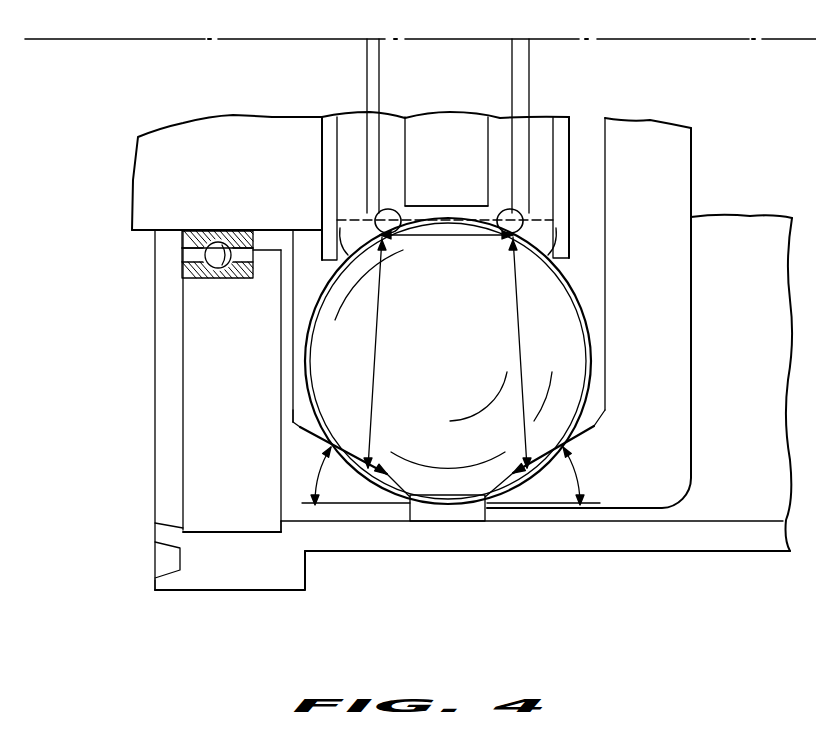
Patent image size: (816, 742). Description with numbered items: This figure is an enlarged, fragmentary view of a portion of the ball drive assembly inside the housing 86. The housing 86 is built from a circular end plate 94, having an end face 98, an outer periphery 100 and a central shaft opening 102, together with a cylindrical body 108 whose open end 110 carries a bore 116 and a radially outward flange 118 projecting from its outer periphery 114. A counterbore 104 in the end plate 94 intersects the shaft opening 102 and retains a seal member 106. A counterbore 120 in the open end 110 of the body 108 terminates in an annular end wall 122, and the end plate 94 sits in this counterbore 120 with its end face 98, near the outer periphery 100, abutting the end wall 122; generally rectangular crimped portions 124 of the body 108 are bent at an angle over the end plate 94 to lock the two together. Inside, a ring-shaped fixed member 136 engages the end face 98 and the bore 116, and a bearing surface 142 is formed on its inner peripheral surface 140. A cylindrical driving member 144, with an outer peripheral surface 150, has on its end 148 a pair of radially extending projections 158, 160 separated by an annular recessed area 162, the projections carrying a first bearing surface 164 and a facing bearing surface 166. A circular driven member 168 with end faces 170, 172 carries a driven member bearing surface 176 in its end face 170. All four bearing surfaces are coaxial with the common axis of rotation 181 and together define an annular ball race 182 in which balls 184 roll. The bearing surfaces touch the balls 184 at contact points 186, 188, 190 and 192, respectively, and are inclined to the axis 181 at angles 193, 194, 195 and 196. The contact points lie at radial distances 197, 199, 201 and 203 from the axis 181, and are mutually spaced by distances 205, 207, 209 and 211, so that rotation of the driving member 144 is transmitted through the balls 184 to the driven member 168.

The housing 86 is at (610, 553).
The end plate 94 is at (190, 337).
The end face 98 is at (284, 308).
The outer periphery 100 is at (254, 534).
The shaft opening 102 is at (248, 231).
The counterbore 104 is at (215, 243).
The seal member 106 is at (190, 252).
The body 108 is at (731, 544).
The open end 110 is at (166, 583).
The outer periphery 114 is at (525, 551).
The bore 116 is at (721, 520).
The flange 118 is at (276, 580).
The counterbore 120 is at (233, 527).
The end wall 122 is at (279, 526).
The crimped portions 124 is at (170, 558).
The fixed member 136 is at (292, 480).
The inner peripheral surface 140 is at (291, 410).
The bearing surface 142 is at (305, 424).
The driving member 144 is at (282, 112).
The end 148 is at (572, 152).
The outer peripheral surface 150 is at (303, 232).
The projection 158 is at (344, 140).
The projection 160 is at (560, 116).
The annular recessed area 162 is at (433, 205).
The first bearing surface 164 is at (390, 258).
The bearing surface 166 is at (509, 268).
The driven member 168 is at (676, 195).
The end face 170 is at (485, 503).
The end face 172 is at (693, 147).
The driven member bearing surface 176 is at (608, 414).
The common axis of rotation 181 is at (655, 39).
The annular ball race 182 is at (560, 267).
The balls 184 is at (570, 327).
The contact point 186 is at (367, 478).
The contact point 188 is at (409, 238).
The contact point 190 is at (497, 238).
The contact point 192 is at (525, 478).
The angle 193 is at (333, 479).
The angle 194 is at (334, 256).
The angle 195 is at (556, 236).
The angle 196 is at (588, 488).
The distance 197 is at (367, 57).
The distance 199 is at (379, 82).
The distance 201 is at (531, 57).
The distance 203 is at (533, 84).
The distance 205 is at (377, 378).
The distance 207 is at (458, 238).
The distance 209 is at (517, 349).
The distance 211 is at (472, 470).